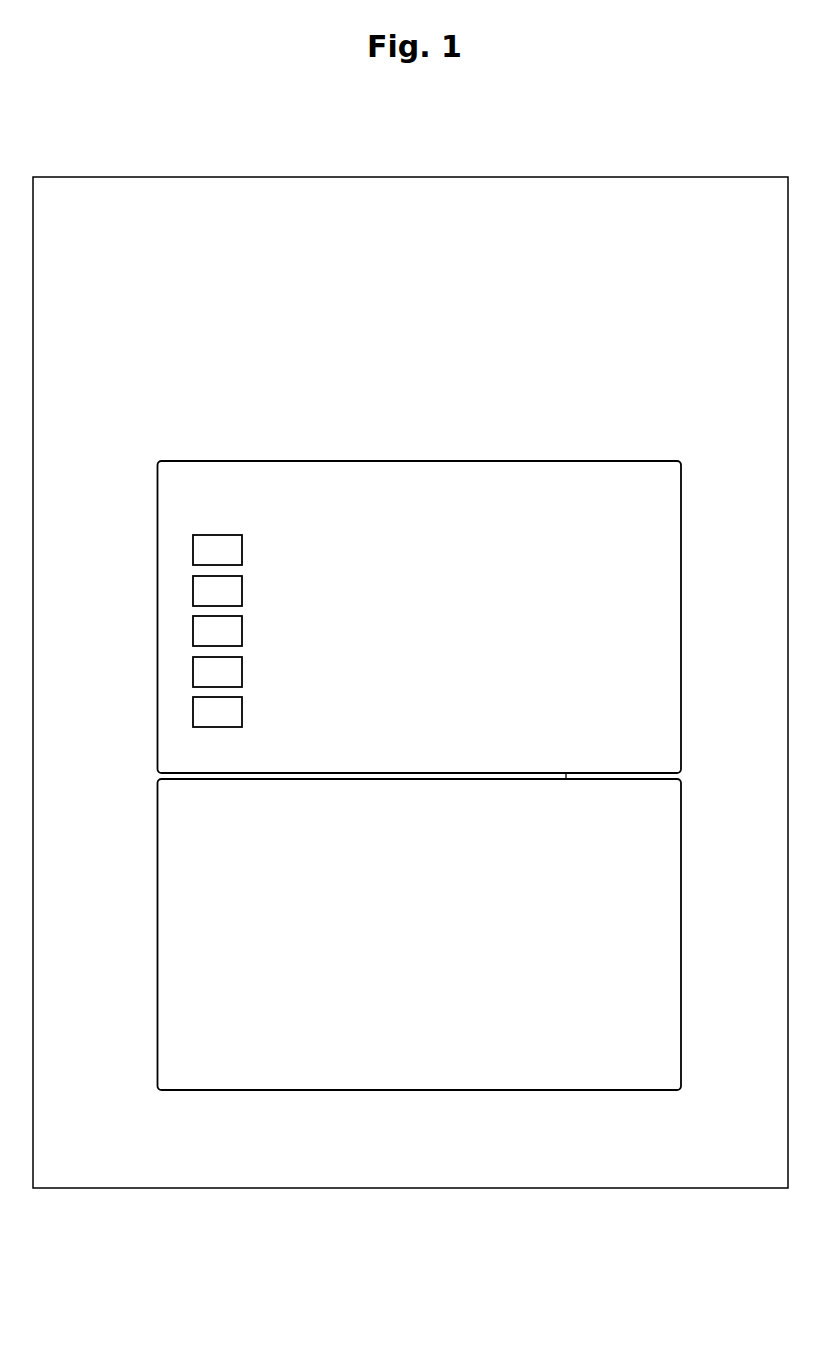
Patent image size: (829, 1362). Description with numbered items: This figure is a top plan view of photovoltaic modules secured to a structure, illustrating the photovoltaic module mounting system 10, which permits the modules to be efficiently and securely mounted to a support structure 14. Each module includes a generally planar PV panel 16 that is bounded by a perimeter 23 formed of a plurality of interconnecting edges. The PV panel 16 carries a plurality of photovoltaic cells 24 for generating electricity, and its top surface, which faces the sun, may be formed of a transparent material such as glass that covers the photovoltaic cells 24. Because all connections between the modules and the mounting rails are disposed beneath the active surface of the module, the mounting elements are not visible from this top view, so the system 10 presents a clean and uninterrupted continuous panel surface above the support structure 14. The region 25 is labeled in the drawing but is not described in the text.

The photovoltaic module mounting system 10 is at (130, 637).
The support structure 14 is at (712, 605).
The PV panel 16 is at (208, 519).
The perimeter 23 is at (157, 908).
The photovoltaic cells 24 is at (193, 686).
The display surface 25 is at (610, 528).